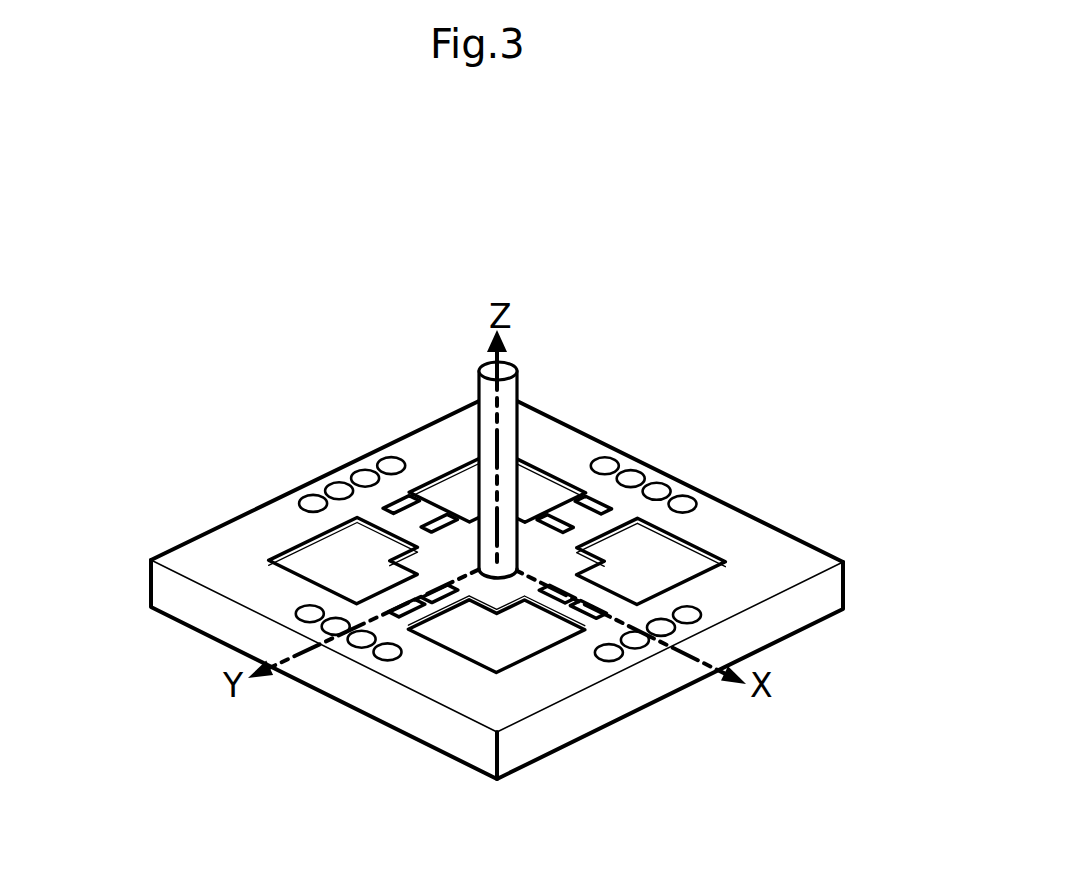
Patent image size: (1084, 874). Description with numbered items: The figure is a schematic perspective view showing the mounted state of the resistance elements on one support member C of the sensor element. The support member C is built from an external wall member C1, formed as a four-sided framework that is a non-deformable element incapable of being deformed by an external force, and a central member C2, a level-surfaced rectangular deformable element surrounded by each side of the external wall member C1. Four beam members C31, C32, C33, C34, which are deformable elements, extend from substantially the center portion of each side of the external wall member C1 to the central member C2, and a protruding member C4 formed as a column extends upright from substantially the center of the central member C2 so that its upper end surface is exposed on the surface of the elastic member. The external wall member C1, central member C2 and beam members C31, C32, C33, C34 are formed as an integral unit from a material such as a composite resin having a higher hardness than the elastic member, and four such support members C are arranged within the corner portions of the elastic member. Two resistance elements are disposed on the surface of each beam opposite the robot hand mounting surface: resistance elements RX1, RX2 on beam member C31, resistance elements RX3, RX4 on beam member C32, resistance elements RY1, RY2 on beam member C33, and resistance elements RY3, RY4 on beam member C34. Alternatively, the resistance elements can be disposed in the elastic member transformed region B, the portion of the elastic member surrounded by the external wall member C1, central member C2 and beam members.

The support member C is at (455, 590).
The external wall member C1 is at (223, 632).
The central member C2 is at (643, 520).
The beam member C31 is at (360, 518).
The beam member C32 is at (692, 580).
The beam member C33 is at (560, 495).
The beam member C34 is at (456, 625).
The protruding member C4 is at (480, 358).
The elastic member transformed region B is at (468, 480).
The resistance element RX1 is at (400, 504).
The resistance element RX2 is at (439, 516).
The resistance element RX3 is at (558, 602).
The resistance element RX4 is at (590, 612).
The resistance element RY1 is at (594, 503).
The resistance element RY2 is at (553, 516).
The resistance element RY3 is at (440, 603).
The resistance element RY4 is at (412, 610).